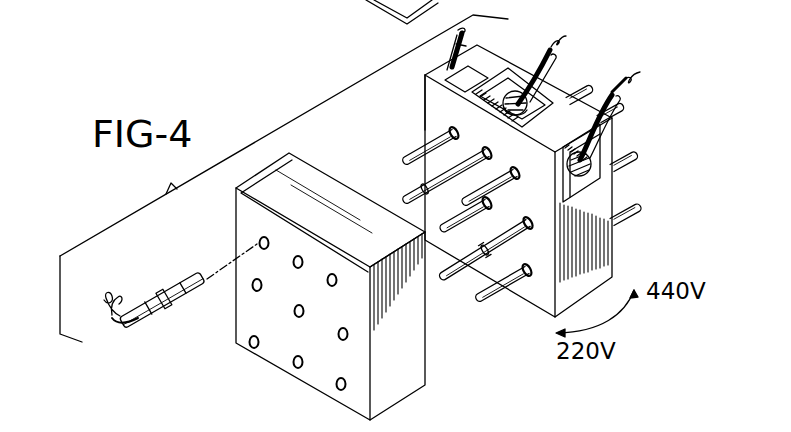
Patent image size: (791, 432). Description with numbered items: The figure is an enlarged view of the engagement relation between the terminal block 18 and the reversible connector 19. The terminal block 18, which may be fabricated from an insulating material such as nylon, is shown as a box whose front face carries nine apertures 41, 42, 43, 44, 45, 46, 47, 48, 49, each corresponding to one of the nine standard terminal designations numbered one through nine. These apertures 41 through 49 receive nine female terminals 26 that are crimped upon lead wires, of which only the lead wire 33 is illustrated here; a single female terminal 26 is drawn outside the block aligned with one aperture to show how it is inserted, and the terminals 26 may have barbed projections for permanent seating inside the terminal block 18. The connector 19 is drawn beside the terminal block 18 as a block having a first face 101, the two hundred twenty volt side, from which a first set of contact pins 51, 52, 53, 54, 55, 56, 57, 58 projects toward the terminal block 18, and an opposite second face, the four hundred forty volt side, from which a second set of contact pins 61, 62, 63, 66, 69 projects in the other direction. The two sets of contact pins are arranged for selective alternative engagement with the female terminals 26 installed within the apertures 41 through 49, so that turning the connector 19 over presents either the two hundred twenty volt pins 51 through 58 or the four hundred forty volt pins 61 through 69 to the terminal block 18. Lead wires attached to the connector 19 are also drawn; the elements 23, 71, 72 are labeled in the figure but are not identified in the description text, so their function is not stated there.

The terminal block 18 is at (254, 177).
The connector 19 is at (423, 93).
The lead wire 23 is at (462, 44).
The female terminal 26 is at (192, 278).
The lead wire 33 is at (140, 325).
The aperture 41 is at (336, 282).
The aperture 42 is at (295, 257).
The aperture 43 is at (259, 241).
The aperture 44 is at (341, 389).
The aperture 45 is at (297, 366).
The aperture 46 is at (250, 343).
The aperture 47 is at (347, 334).
The aperture 48 is at (297, 315).
The aperture 49 is at (254, 288).
The contact pin 51 is at (503, 190).
The contact pin 52 is at (466, 157).
The contact pin 53 is at (402, 160).
The contact pin 54 is at (401, 200).
The contact pin 55 is at (445, 276).
The contact pin 56 is at (440, 240).
The contact pin 57 is at (495, 252).
The contact pin 58 is at (412, 230).
The contact pin 61 is at (570, 85).
The contact pin 62 is at (600, 100).
The contact pin 63 is at (622, 108).
The contact pin 66 is at (641, 206).
The contact pin 69 is at (637, 155).
The wire end 71 is at (628, 78).
The lead wire 72 is at (545, 40).
The first face 101 is at (430, 122).